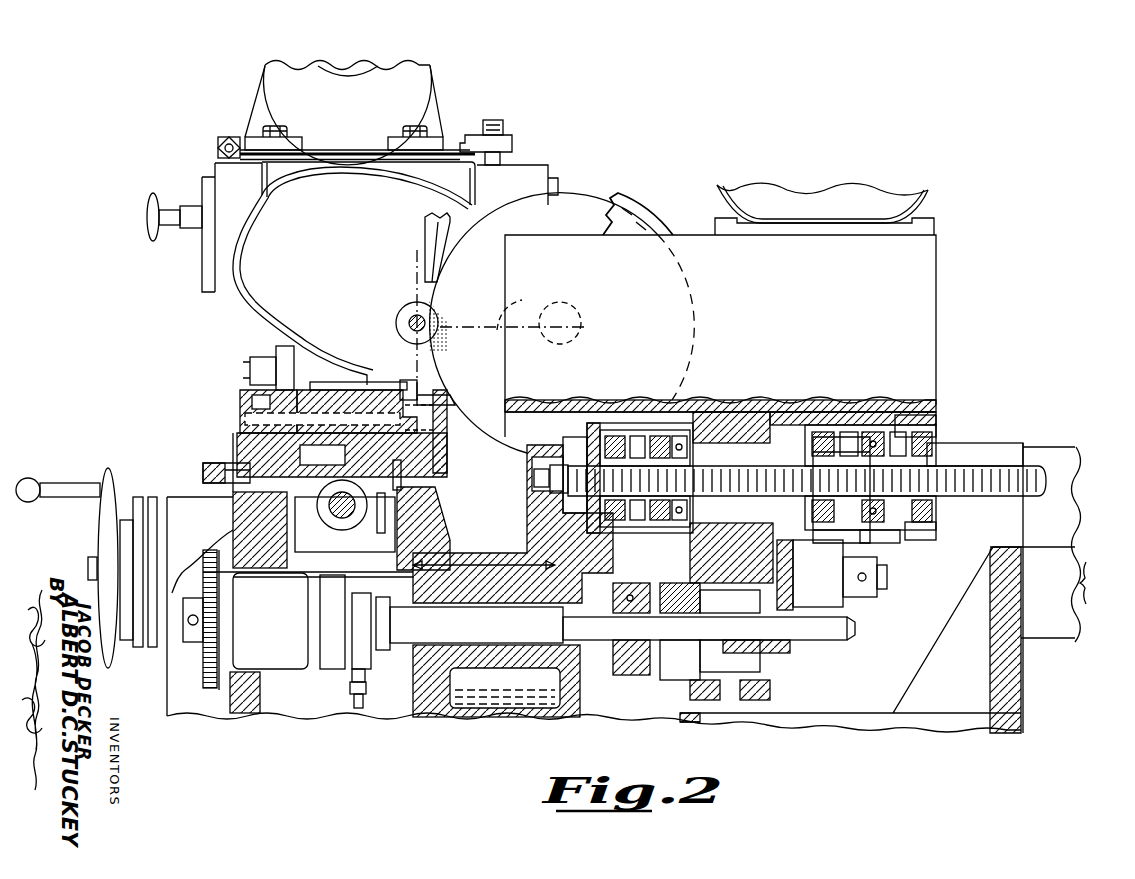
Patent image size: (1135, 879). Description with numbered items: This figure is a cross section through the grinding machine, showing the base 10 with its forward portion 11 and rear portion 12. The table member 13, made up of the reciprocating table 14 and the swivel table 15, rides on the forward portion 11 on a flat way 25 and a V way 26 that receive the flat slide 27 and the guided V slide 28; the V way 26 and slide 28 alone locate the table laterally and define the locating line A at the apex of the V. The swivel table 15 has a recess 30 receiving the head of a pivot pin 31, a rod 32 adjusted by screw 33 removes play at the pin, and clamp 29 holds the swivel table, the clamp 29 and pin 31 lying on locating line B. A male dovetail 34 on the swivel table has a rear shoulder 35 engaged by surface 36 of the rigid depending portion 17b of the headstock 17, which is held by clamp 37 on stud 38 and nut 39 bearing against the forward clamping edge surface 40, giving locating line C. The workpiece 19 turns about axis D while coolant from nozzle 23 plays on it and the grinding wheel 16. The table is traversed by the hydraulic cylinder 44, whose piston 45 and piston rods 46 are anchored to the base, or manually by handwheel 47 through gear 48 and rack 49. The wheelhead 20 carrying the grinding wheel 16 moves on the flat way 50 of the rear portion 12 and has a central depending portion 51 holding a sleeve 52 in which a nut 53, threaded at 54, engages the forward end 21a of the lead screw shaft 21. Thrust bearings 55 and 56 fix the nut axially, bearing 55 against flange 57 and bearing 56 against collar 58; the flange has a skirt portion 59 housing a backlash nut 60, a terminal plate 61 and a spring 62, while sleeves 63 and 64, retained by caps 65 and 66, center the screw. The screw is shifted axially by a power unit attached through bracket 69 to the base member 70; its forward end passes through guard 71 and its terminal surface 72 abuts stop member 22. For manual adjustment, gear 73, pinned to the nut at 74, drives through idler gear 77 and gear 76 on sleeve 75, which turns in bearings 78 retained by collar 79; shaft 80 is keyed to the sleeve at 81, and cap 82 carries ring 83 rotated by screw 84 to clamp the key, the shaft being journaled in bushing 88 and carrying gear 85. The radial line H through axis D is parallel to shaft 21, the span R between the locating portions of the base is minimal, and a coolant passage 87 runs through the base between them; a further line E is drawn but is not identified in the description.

The base 10 is at (425, 722).
The forward portion 11 is at (308, 556).
The rear portion 12 is at (565, 575).
The table member 13 is at (228, 433).
The reciprocating table 14 is at (342, 455).
The swivel table 15 is at (357, 411).
The grinding wheel 16 is at (575, 200).
The headstock 17 is at (248, 297).
The rigid depending portion 17b is at (435, 402).
The workpiece 19 is at (408, 320).
The wheelhead 20 is at (940, 258).
The lead screw shaft 21 is at (1040, 498).
The forward end of lead screw shaft 21a is at (624, 479).
The stop member 22 is at (546, 519).
The nozzle 23 is at (440, 272).
The flat way 25 is at (258, 488).
The V way 26 is at (425, 502).
The flat slide 27 is at (260, 530).
The guided V slide 28 is at (423, 528).
The clamp 29 is at (450, 425).
The recess 30 is at (448, 412).
The pivot pin 31 is at (448, 440).
The rod 32 is at (322, 411).
The screw 33 is at (240, 415).
The male dovetail 34 is at (322, 378).
The shoulder 35 is at (430, 396).
The surface 36 is at (407, 380).
The clamp 37 is at (278, 350).
The headstock stud 38 is at (250, 367).
The nut 39 is at (255, 360).
The forward clamping edge surface 40 is at (277, 407).
The hydraulic cylinder 44 is at (342, 524).
The piston 45 is at (345, 545).
The piston rods 46 is at (330, 510).
The handwheel 47 is at (112, 470).
The gear 48 is at (381, 533).
The rack 49 is at (396, 490).
The flat way 50 is at (1000, 445).
The central portion 51 is at (731, 553).
The sleeve 52 is at (731, 427).
The nut 53 is at (839, 421).
The internal thread 54 is at (807, 481).
The thrust bearing 55 is at (828, 425).
The thrust bearing 56 is at (668, 430).
The flange 57 is at (862, 425).
The collar 58 is at (630, 430).
The skirt portion 59 is at (905, 425).
The backlash nut 60 is at (841, 490).
The terminal plate 61 is at (880, 437).
The spring 62 is at (872, 543).
The sleeve 63 is at (625, 530).
The sleeve 64 is at (940, 505).
The cap 65 is at (600, 425).
The cap 66 is at (936, 528).
The bracket 69 is at (1066, 600).
The base member 70 is at (1023, 679).
The guard 71 is at (560, 408).
The forward terminal surface 72 is at (558, 465).
The gear 73 is at (784, 405).
The pin 74 is at (810, 575).
The sleeve 75 is at (790, 648).
The gear 76 is at (790, 660).
The idler gear 77 is at (843, 585).
The bearings 78 is at (770, 682).
The collar 79 is at (672, 583).
The shaft 80 is at (709, 628).
The key 81 is at (690, 618).
The cap 82 is at (640, 583).
The ring 83 is at (613, 660).
The screw 84 is at (640, 676).
The gear 85 is at (203, 676).
The coolant passage 87 is at (499, 675).
The bushing 88 is at (280, 670).
The locating line A is at (425, 505).
The locating line B is at (384, 446).
The locating line C is at (432, 372).
The workpiece axis D is at (432, 322).
The line E is at (415, 262).
The radial line H is at (505, 305).
The span R is at (484, 571).